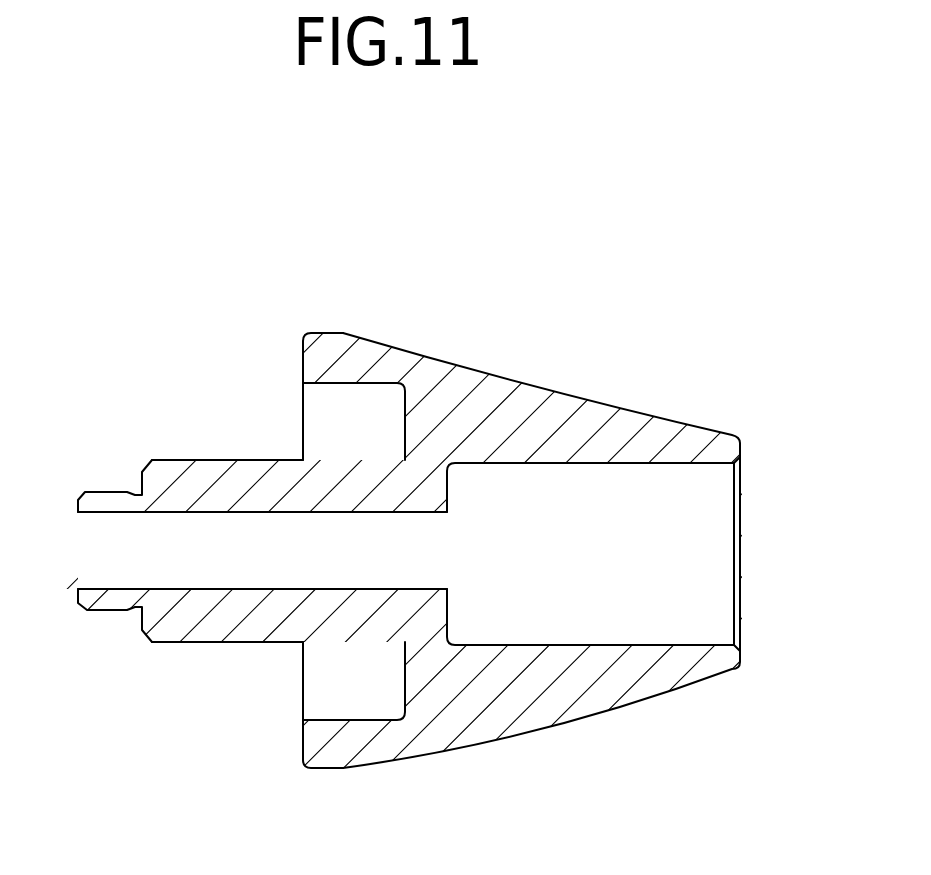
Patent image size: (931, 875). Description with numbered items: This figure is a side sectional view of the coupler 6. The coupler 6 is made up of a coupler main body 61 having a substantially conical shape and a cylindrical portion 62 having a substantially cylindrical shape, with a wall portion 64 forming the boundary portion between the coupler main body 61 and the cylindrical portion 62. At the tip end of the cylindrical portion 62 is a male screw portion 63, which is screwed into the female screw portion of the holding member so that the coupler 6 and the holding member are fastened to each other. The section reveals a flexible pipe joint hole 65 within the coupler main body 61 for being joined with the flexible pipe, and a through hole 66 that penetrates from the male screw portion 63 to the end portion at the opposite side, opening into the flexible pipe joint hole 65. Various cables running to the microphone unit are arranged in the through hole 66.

The coupler 6 is at (386, 241).
The coupler main body 61 is at (447, 360).
The cylindrical portion 62 is at (223, 460).
The male screw portion 63 is at (111, 492).
The wall portion 64 is at (303, 358).
The flexible pipe joint hole 65 is at (712, 521).
The through hole 66 is at (207, 573).